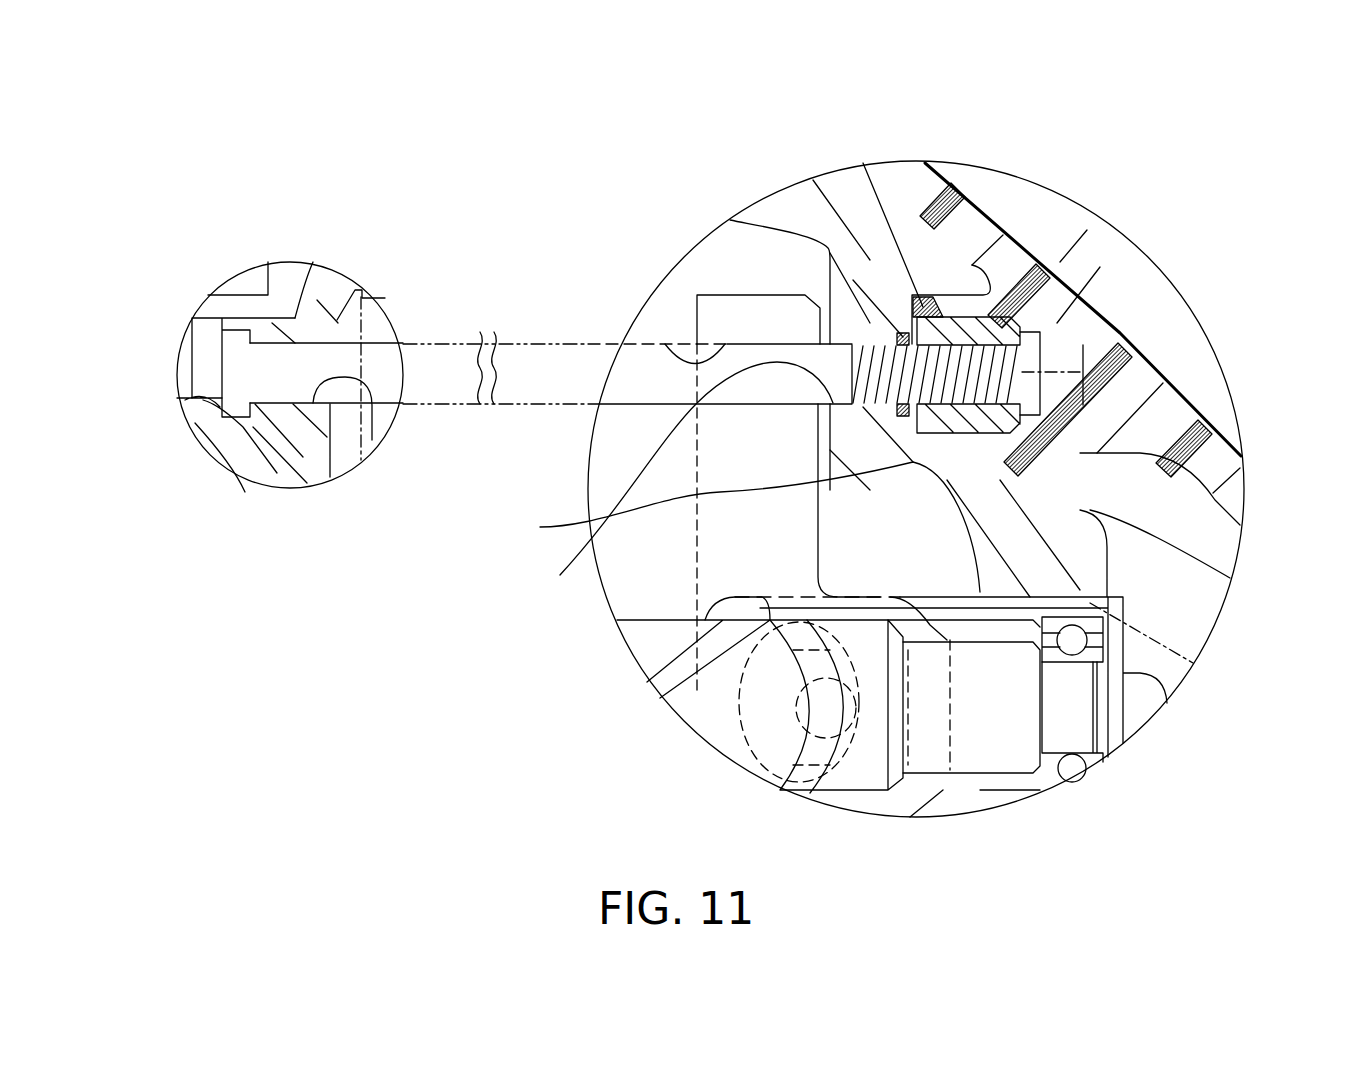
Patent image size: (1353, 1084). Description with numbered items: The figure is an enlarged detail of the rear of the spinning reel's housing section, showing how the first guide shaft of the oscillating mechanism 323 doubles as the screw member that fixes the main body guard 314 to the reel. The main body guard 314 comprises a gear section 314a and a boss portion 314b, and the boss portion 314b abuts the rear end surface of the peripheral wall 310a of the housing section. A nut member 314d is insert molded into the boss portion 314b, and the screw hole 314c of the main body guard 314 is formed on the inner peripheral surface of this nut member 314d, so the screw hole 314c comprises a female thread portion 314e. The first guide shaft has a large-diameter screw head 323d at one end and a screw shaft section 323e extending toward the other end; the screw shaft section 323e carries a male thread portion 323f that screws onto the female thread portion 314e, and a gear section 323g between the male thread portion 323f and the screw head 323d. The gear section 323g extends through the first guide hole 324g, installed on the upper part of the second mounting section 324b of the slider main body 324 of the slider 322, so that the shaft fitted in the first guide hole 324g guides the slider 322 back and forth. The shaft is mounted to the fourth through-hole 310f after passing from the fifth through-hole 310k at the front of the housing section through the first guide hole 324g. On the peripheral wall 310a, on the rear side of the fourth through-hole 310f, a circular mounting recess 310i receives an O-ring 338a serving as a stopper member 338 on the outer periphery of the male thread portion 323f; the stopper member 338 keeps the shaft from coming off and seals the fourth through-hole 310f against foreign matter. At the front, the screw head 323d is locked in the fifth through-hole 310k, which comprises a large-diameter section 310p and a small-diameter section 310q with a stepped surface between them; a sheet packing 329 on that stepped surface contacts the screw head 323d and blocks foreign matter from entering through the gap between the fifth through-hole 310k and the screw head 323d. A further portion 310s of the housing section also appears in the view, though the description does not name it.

The screw head 323d is at (233, 348).
The housing wall portion 310s is at (237, 345).
The large-diameter section 310p is at (205, 398).
The fifth through-hole 310k is at (257, 427).
The sheet packing 329 is at (284, 395).
The small-diameter section 310q is at (372, 440).
The first guide hole 324g is at (668, 340).
The sleeve 323 is at (630, 343).
The screw shaft section 323e is at (657, 418).
The gear section 323g is at (632, 404).
The fourth through-hole 310f is at (777, 502).
The male thread portion 323f is at (661, 480).
The slider 322 is at (670, 567).
The slider main body 324 is at (690, 742).
The second mounting section 324b is at (723, 700).
The stopper member 338 is at (795, 228).
The O-ring 338a is at (833, 343).
The circular mounting recess 310i is at (903, 335).
The boss portion 314b is at (972, 265).
The main body guard 314 is at (1040, 230).
The nut member 314d is at (1055, 325).
The screw hole 314c is at (1045, 350).
The female thread portion 314e is at (1045, 385).
The gear section 314a is at (1208, 465).
The peripheral wall 310a is at (1118, 565).